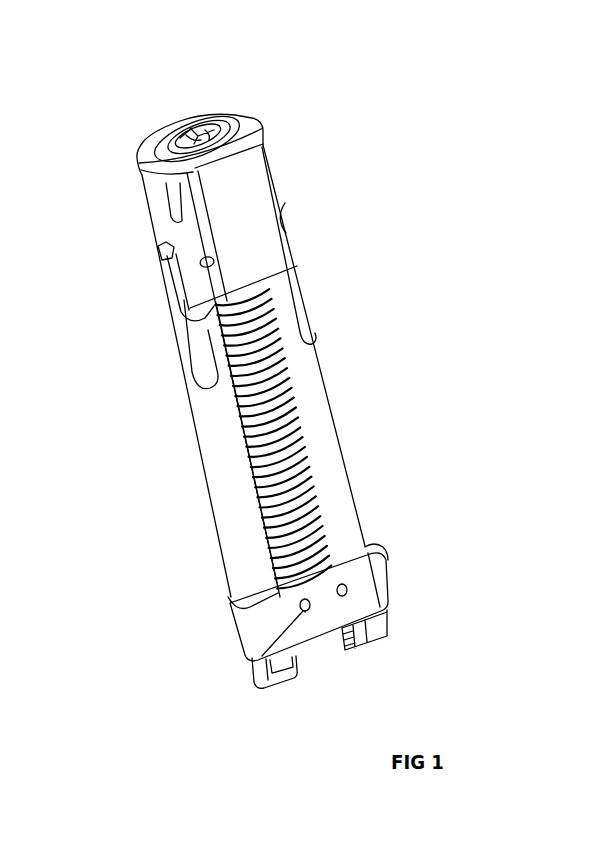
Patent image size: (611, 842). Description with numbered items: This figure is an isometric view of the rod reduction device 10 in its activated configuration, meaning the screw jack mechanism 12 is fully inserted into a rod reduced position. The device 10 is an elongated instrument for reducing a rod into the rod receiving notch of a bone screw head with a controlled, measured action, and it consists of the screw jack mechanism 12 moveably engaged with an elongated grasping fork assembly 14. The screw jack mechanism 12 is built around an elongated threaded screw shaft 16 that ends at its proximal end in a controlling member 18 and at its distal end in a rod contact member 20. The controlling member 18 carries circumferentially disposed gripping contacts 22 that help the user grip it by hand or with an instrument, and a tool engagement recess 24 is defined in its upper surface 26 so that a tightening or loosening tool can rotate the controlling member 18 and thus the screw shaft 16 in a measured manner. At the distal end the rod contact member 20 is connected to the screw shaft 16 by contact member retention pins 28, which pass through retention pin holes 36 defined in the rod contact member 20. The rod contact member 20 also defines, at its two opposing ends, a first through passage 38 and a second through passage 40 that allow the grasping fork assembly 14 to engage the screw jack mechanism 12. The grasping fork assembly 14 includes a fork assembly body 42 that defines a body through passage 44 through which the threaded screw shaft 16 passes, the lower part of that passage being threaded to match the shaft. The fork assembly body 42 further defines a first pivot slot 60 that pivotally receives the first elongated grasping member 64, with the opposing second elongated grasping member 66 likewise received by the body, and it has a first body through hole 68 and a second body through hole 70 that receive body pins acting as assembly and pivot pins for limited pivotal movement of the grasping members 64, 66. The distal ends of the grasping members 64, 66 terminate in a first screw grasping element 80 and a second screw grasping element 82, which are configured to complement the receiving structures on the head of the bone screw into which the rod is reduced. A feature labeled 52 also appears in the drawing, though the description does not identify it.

The rod reduction device 10 is at (404, 259).
The screw jack mechanism 12 is at (233, 403).
The elongated grasping fork assembly 14 is at (325, 405).
The elongated threaded screw shaft 16 is at (307, 455).
The controlling member 18 is at (223, 130).
The rod contact member 20 is at (362, 602).
The gripping contacts 22 is at (242, 133).
The tool engagement recess 24 is at (210, 133).
The upper surface 26 is at (188, 137).
The contact member retention pins 28 is at (307, 613).
The retention pin holes 36 is at (347, 585).
The first through passage 38 is at (228, 595).
The second through passage 40 is at (370, 548).
The fork assembly body 42 is at (262, 202).
The body through passage 44 is at (150, 135).
The latch tab 52 is at (155, 205).
The first pivot slot 60 is at (165, 243).
The first elongated grasping member 64 is at (180, 328).
The second elongated grasping member 66 is at (302, 285).
The first body through hole 68 is at (200, 265).
The second body through hole 70 is at (287, 228).
The first screw grasping element 80 is at (292, 690).
The second screw grasping element 82 is at (353, 647).